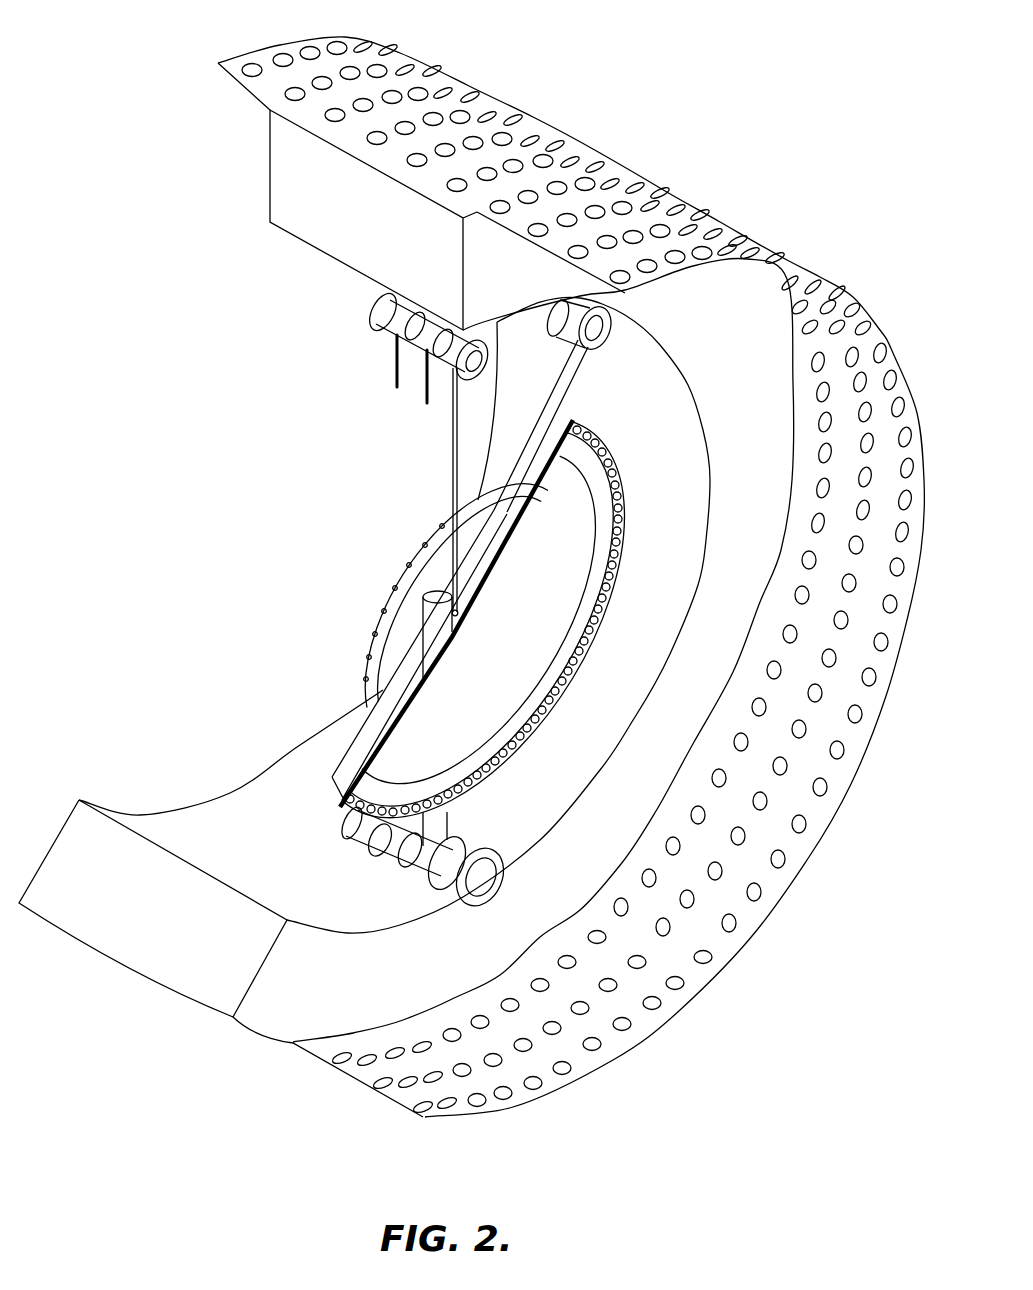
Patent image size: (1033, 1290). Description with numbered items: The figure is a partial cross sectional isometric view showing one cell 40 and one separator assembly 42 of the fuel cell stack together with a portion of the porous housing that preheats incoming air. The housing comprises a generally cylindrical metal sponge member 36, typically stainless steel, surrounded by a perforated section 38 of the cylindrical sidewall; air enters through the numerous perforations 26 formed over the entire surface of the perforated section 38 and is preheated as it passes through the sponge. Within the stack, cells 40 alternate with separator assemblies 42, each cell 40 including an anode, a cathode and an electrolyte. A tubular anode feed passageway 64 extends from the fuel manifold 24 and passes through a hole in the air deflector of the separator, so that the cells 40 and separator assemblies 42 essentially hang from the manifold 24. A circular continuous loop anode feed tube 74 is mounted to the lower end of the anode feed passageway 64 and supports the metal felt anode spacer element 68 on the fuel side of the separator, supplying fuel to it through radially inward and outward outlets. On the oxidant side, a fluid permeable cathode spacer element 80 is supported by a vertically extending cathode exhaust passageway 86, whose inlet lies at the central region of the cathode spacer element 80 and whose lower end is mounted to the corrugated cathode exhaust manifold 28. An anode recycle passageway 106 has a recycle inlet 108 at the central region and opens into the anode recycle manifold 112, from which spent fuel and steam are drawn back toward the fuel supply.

The fuel manifold 24 is at (597, 330).
The perforations 26 is at (284, 52).
The cathode exhaust manifold 28 is at (480, 880).
The metal sponge member 36 is at (299, 178).
The perforated section 38 is at (597, 152).
The cell 40 is at (592, 508).
The separator assembly 42 is at (626, 436).
The anode feed passageway 64 is at (557, 383).
The anode spacer element 68 is at (368, 765).
The anode feed tube 74 is at (380, 608).
The cathode spacer element 80 is at (367, 732).
The cathode exhaust passageway 86 is at (432, 622).
The anode recycle passageway 106 is at (452, 452).
The recycle inlet 108 is at (460, 607).
The anode recycle manifold 112 is at (387, 315).